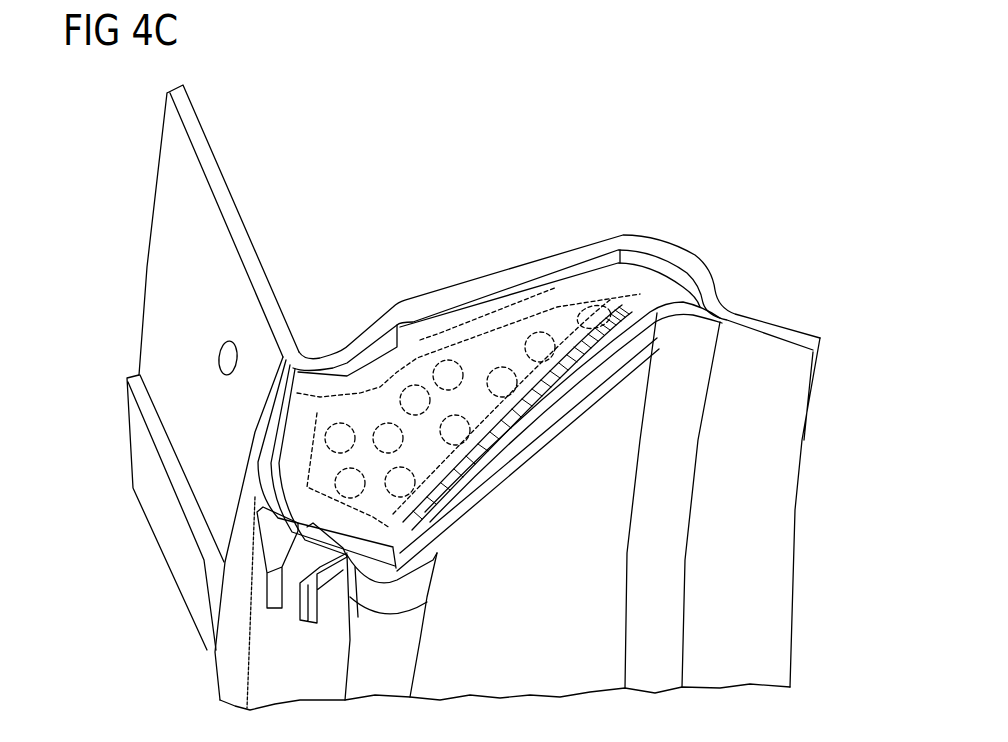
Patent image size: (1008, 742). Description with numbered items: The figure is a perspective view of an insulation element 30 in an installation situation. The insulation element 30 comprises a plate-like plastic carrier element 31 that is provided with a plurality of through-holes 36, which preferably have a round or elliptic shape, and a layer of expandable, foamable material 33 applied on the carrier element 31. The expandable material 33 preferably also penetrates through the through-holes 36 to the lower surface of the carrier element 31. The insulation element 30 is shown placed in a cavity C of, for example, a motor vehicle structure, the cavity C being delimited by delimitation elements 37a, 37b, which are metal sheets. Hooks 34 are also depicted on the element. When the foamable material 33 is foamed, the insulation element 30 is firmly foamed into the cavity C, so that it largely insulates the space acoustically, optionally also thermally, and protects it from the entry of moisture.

The insulation element 30 is at (745, 258).
The carrier element 31 is at (627, 303).
The expandable material 33 is at (377, 413).
The hooks 34 is at (267, 573).
The through-holes 36 is at (450, 370).
The delimitation element 37a is at (785, 507).
The delimitation element 37b is at (158, 275).
The cavity C is at (555, 253).